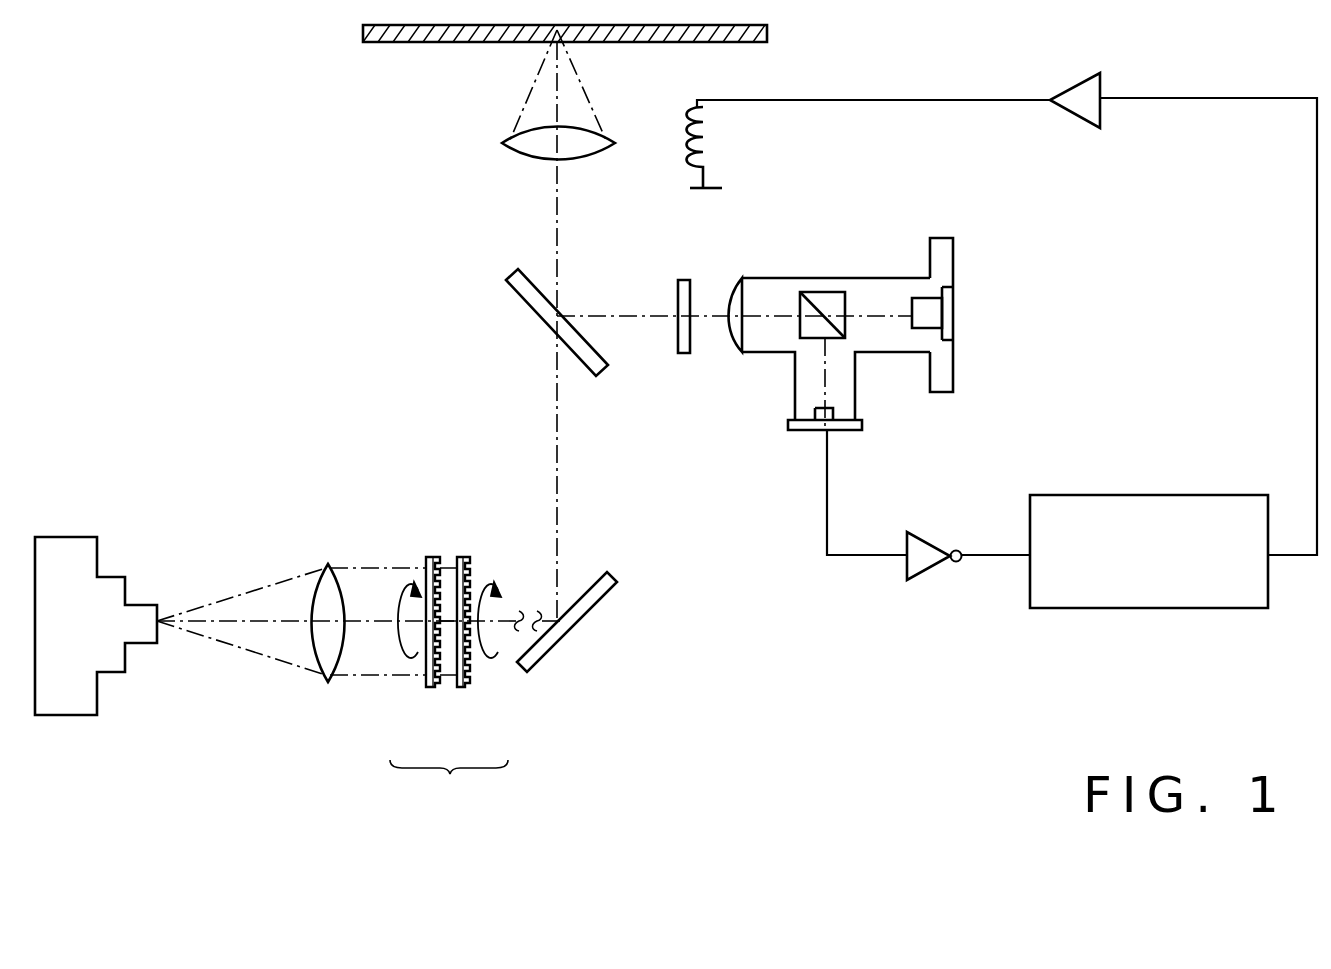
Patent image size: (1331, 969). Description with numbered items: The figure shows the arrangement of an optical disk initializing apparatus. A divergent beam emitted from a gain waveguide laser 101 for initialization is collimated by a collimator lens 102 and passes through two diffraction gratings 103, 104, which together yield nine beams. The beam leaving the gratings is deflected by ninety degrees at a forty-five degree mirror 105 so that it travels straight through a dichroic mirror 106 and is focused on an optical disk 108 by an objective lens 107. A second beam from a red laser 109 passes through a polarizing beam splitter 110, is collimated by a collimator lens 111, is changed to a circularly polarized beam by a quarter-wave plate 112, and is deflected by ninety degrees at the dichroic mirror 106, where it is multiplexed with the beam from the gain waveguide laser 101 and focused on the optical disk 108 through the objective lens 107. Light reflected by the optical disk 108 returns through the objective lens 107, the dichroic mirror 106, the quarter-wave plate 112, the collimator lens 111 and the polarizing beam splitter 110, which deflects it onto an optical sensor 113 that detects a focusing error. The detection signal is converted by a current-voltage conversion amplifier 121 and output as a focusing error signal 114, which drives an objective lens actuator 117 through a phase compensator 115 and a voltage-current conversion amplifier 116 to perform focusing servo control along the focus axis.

The gain waveguide laser 101 is at (118, 677).
The collimator lens 102 is at (328, 562).
The diffraction grating 103 is at (430, 688).
The diffraction grating 104 is at (465, 688).
The 45° mirror 105 is at (575, 628).
The dichroic mirror 106 is at (522, 307).
The objective lens 107 is at (512, 147).
The optical disk 108 is at (388, 43).
The 680-nm red laser 109 is at (923, 330).
The polarizing beam splitter 110 is at (825, 292).
The collimator lens 111 is at (736, 353).
The λ/4 plate 112 is at (683, 279).
The optical sensor 113 is at (804, 432).
The focusing error signal 114 is at (998, 557).
The phase compensator 115 is at (1213, 494).
The voltage-current conversion amplifier 116 is at (1082, 78).
The objective lens actuator 117 is at (699, 105).
The current-voltage conversion amplifier 121 is at (928, 534).